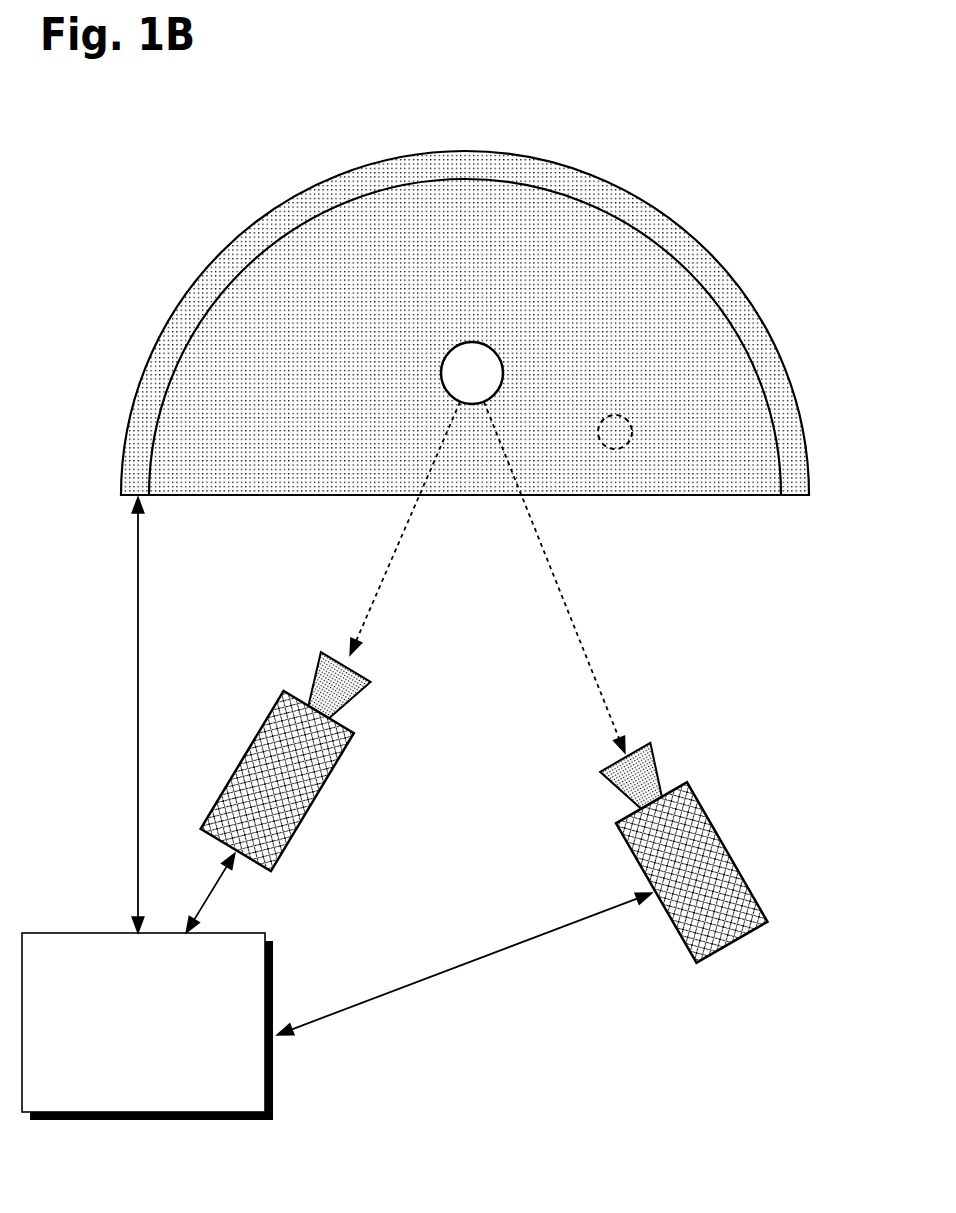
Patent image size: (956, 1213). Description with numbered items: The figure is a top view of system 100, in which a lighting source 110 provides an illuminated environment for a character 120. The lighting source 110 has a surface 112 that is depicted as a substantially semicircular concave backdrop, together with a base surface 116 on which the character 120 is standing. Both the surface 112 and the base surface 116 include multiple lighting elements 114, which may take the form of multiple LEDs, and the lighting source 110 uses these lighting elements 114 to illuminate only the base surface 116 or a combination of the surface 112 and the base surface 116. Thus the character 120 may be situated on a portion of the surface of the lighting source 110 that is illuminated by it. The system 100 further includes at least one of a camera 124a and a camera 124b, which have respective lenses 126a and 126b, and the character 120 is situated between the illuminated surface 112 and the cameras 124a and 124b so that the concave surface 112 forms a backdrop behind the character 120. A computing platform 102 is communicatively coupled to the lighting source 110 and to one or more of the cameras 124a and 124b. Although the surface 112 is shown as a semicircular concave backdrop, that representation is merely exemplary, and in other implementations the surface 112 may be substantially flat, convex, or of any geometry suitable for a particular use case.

The system 100 is at (768, 137).
The lighting source 110 is at (159, 259).
The surface 112 is at (160, 407).
The base surface 116 is at (678, 372).
The character 120 is at (452, 349).
The lighting elements 114 is at (632, 432).
The camera 124a is at (285, 855).
The lens 126a is at (313, 673).
The camera 124b is at (727, 950).
The lens 126b is at (658, 773).
The computing platform 102 is at (117, 1120).